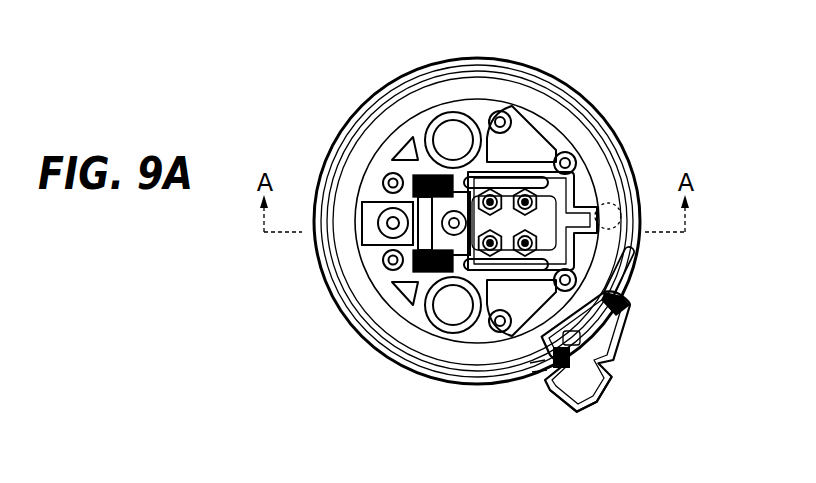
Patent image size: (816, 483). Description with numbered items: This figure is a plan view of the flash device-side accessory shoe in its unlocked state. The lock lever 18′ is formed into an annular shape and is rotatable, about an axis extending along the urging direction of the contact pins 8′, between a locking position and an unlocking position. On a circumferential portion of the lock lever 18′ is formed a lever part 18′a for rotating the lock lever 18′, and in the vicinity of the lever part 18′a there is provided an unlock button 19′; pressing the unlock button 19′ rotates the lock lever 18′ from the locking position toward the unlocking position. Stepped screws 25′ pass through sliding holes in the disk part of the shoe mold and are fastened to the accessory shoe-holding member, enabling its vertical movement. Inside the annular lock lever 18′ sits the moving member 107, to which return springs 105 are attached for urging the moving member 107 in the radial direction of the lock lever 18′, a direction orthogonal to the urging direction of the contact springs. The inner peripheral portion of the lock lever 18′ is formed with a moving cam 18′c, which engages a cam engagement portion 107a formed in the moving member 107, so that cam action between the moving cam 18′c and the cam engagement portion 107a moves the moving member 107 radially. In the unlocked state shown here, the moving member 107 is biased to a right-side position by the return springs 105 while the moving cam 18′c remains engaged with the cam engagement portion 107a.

The contact pins 8′ is at (490, 202).
The lock lever 18′ is at (522, 92).
The lever part 18′a is at (598, 390).
The moving cam 18′c is at (625, 247).
The unlock button 19′ is at (619, 351).
The stepped screw 25′ is at (444, 140).
The return springs 105 is at (415, 260).
The moving member 107 is at (567, 222).
The cam engagement portion 107a is at (620, 210).